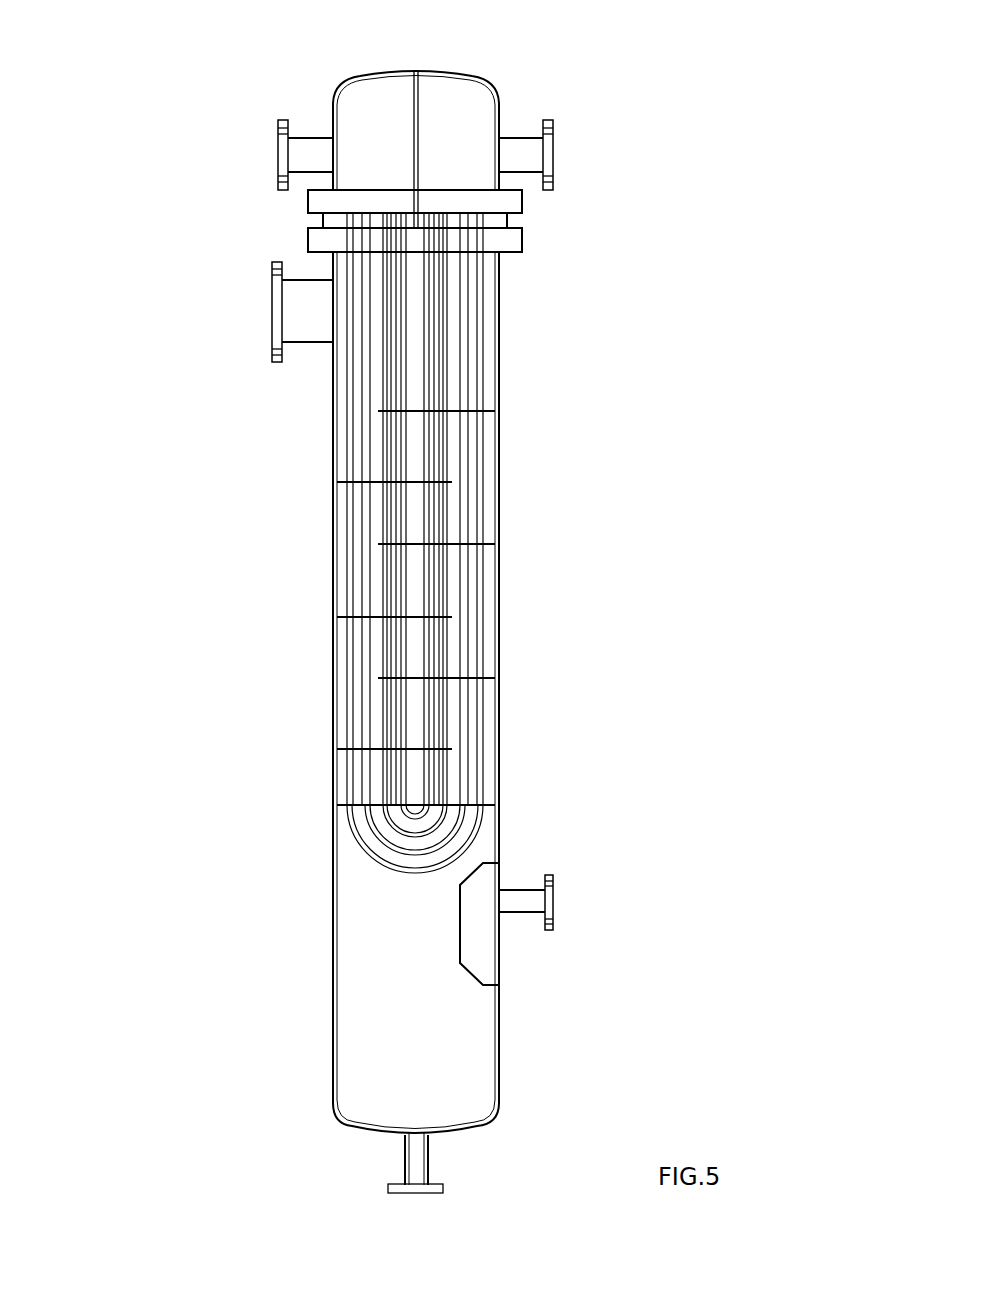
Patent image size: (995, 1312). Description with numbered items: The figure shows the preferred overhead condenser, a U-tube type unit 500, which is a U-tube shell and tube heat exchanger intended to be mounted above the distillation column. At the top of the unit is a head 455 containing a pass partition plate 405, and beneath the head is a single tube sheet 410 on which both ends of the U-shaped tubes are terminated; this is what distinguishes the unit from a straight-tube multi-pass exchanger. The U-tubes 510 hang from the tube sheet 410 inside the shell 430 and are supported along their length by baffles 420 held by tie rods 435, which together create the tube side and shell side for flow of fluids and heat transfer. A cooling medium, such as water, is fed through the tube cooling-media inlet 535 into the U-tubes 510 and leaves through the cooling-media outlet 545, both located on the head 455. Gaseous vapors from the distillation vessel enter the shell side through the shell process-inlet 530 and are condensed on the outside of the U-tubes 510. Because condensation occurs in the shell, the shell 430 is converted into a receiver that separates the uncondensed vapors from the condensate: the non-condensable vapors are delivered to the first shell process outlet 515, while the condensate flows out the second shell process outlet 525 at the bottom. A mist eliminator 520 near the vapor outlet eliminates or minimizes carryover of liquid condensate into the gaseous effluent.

The U-tube type unit 500 is at (128, 92).
The head 455 is at (337, 97).
The pass partition plate 405 is at (418, 103).
The tube sheet 410 is at (507, 221).
The baffles 420 is at (495, 411).
The shell 430 is at (500, 650).
The tie rods 435 is at (472, 805).
The U-tubes 510 is at (477, 828).
The first shell process outlet 515 is at (567, 902).
The mist eliminator 520 is at (475, 952).
The second shell process outlet 525 is at (346, 1179).
The shell process-inlet 530 is at (262, 312).
The tube cooling-media inlet 535 is at (262, 156).
The cooling-media outlet 545 is at (566, 156).